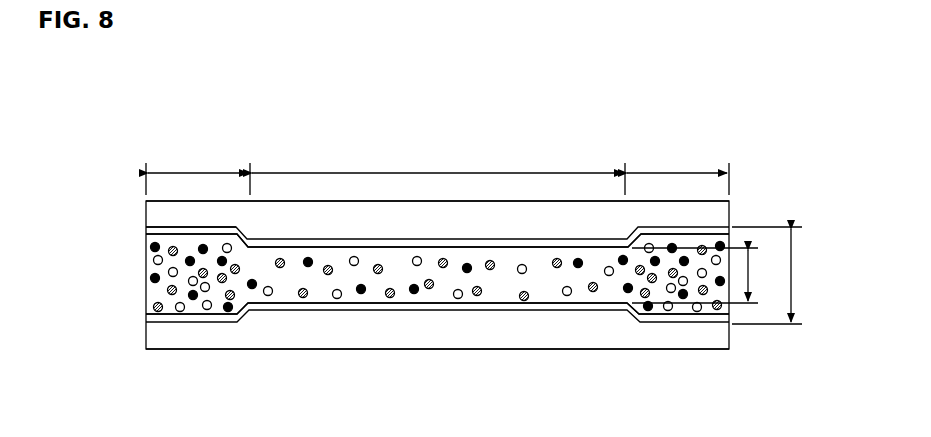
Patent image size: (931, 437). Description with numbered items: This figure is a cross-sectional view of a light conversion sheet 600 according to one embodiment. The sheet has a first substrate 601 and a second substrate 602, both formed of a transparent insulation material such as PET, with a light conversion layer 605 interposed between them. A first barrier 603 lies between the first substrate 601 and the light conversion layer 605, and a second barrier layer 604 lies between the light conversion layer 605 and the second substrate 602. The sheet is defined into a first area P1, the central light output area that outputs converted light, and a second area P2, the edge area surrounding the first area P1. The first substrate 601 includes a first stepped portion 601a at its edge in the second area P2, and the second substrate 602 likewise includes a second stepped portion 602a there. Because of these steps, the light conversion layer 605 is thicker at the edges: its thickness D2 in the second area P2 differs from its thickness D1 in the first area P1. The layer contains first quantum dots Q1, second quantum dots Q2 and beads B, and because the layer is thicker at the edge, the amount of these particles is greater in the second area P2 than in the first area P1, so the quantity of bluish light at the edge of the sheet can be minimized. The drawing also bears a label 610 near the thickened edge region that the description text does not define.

The light conversion sheet 600 is at (130, 96).
The second stepped portion 602a is at (152, 215).
The second barrier layer 604 is at (152, 230).
The light conversion layer 605 is at (132, 277).
The first barrier 603 is at (152, 318).
The first stepped portion 601a is at (152, 337).
The second substrate 602 is at (315, 228).
The first substrate 601 is at (452, 337).
The first quantum dots Q1 is at (414, 294).
The second quantum dots Q2 is at (524, 301).
The beads B is at (568, 296).
The thickened peripheral portion 610 is at (683, 307).
The first area P1 is at (437, 162).
The second area P2 is at (437, 173).
The thickness of the light conversion layer in the first area D1 is at (705, 275).
The thickness of the light conversion layer in the second area D2 is at (776, 275).